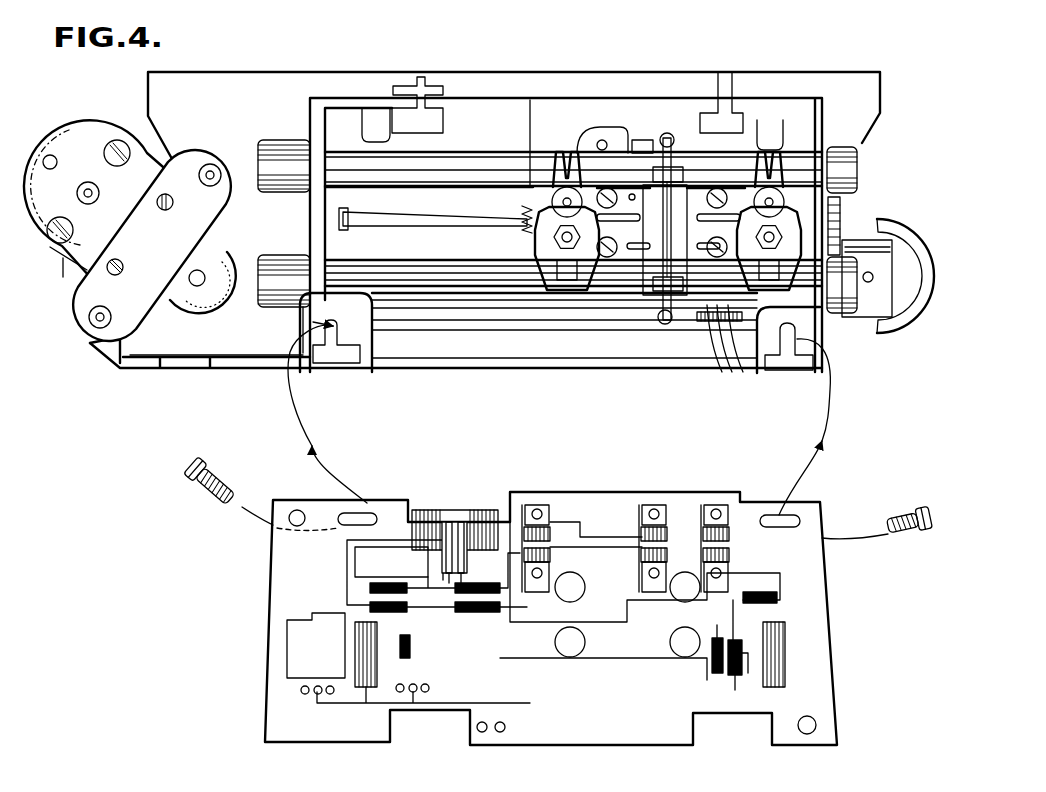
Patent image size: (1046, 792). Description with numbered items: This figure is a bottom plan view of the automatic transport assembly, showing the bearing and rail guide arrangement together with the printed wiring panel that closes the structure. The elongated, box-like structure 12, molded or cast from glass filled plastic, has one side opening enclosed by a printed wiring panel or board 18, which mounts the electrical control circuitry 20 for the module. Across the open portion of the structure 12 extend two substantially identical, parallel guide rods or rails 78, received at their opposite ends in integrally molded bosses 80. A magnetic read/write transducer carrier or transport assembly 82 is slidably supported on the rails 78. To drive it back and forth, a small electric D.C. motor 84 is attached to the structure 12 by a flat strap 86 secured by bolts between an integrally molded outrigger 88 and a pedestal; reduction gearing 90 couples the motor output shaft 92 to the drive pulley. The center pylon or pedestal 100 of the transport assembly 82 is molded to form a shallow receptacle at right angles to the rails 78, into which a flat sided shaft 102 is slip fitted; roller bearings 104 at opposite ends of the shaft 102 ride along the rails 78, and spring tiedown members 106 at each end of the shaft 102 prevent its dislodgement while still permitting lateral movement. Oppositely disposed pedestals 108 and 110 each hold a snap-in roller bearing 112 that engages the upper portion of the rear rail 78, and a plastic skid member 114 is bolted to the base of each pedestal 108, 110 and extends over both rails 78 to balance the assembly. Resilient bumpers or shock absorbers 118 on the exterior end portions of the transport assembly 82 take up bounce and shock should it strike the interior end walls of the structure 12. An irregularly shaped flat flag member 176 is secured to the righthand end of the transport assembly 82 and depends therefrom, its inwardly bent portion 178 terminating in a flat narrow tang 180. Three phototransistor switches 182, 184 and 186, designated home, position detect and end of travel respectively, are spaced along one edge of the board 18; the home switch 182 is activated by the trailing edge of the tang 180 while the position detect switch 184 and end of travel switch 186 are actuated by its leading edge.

The box-like structure 12 is at (838, 93).
The printed wiring panel or board 18 is at (277, 566).
The electrical control circuitry 20 is at (474, 520).
The guide rods or rails 78 is at (468, 173).
The integrally molded bosses 80 is at (282, 262).
The transducer carrier or transport assembly 82 is at (629, 192).
The electric D.C. motor 84 is at (48, 127).
The flat strap 86 is at (141, 250).
The outrigger 88 is at (110, 356).
The reduction gearing 90 is at (82, 125).
The motor output shaft 92 is at (77, 193).
The center pylon or pedestal 100 is at (653, 168).
The flat sided shaft 102 is at (648, 283).
The roller bearings 104 is at (683, 322).
The spring tiedown members 106 is at (668, 132).
The pedestal 108 is at (530, 100).
The pedestal 110 is at (800, 187).
The snap-in roller bearing 112 is at (569, 165).
The plastic skid member 114 is at (548, 290).
The resilient bumpers or shock absorbers 118 is at (520, 215).
The flag member 176 is at (709, 310).
The inwardly bent portion 178 is at (719, 310).
The tang 180 is at (730, 310).
The home switch 182 is at (720, 522).
The position detect switch 184 is at (658, 522).
The end of travel switch 186 is at (547, 510).